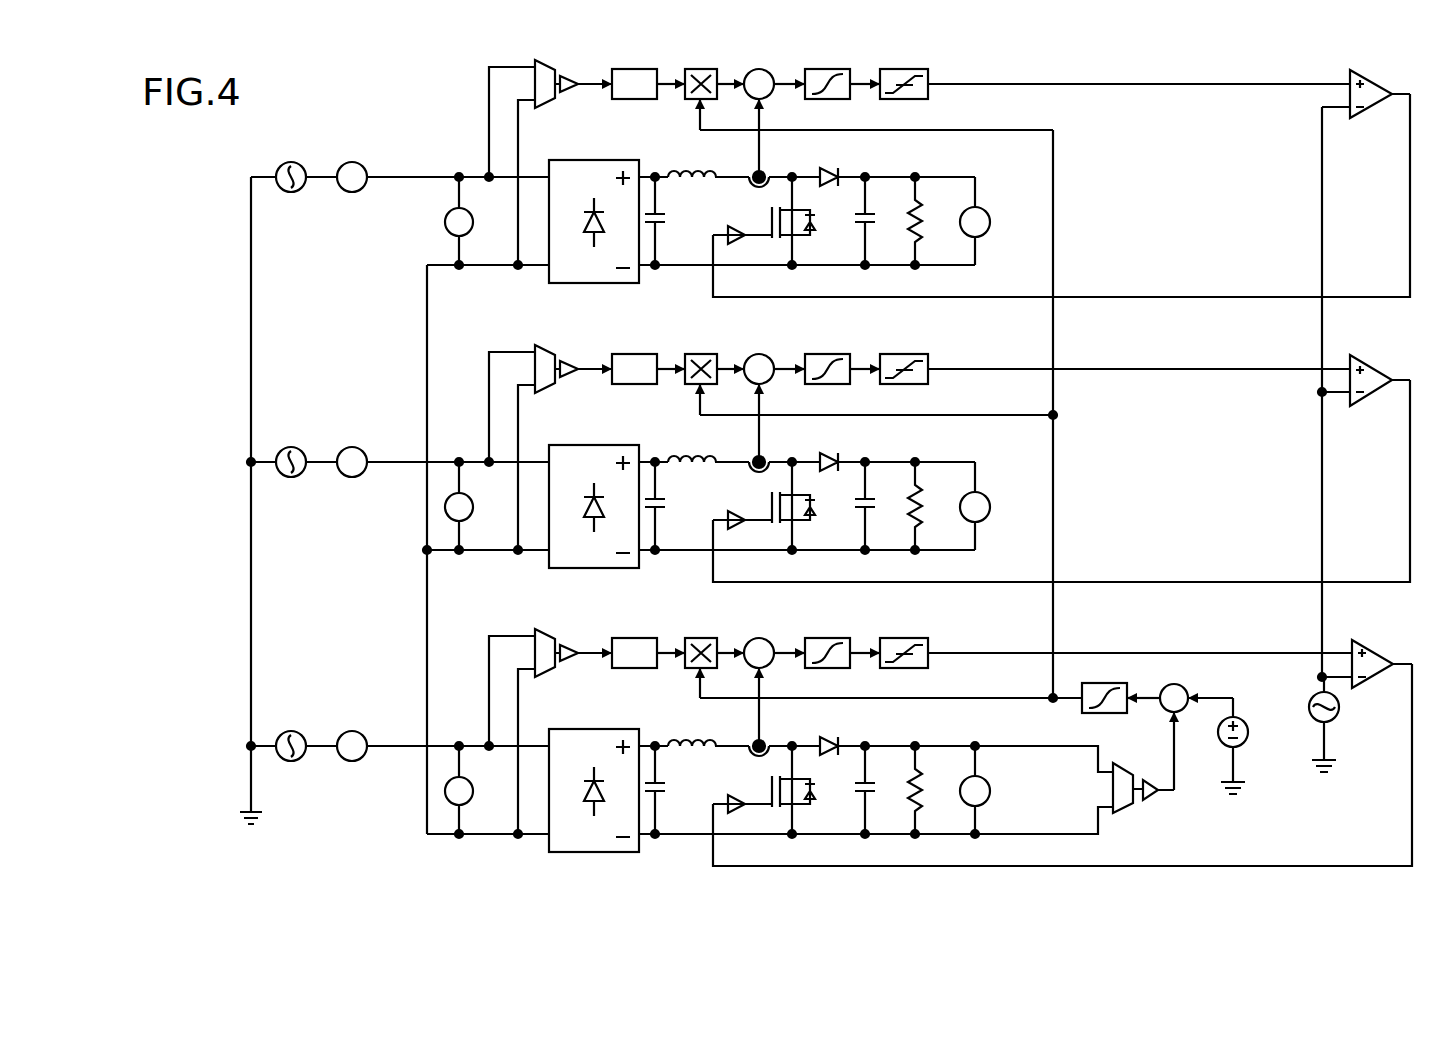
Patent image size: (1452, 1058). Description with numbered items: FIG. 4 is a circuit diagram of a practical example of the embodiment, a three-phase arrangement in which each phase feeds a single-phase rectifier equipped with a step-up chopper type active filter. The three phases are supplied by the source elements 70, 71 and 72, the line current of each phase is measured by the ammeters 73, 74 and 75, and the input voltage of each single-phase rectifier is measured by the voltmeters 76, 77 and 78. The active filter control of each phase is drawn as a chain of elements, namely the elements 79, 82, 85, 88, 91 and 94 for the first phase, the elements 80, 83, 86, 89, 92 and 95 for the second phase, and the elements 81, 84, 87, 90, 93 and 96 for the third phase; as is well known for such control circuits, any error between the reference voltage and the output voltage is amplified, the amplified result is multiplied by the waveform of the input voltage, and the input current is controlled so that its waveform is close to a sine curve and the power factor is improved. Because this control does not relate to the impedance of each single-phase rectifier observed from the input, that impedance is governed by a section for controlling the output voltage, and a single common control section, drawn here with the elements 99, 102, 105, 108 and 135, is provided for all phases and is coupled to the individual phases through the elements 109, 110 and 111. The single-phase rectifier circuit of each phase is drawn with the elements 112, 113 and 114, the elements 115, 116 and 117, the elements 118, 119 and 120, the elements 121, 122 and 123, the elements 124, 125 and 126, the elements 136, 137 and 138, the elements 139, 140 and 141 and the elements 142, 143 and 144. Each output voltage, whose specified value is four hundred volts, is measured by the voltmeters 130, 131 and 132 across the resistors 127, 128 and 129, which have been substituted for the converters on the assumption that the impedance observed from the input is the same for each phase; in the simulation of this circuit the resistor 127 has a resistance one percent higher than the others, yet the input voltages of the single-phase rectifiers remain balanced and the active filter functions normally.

The AC voltage source Vr 70 is at (294, 163).
The AC voltage source Vs 71 is at (294, 448).
The AC voltage source Vt 72 is at (294, 732).
The ammeter 73 is at (356, 163).
The ammeter 74 is at (356, 448).
The ammeter 75 is at (356, 732).
The voltmeter 76 is at (445, 224).
The voltmeter 77 is at (445, 509).
The voltmeter 78 is at (445, 793).
The multiplexer 79 is at (567, 49).
The multiplexer 80 is at (567, 334).
The multiplexer 81 is at (567, 618).
The absolute value circuit 82 is at (632, 69).
The absolute value circuit 83 is at (632, 354).
The absolute value circuit 84 is at (632, 638).
The multiplier 85 is at (700, 69).
The multiplier 86 is at (700, 354).
The multiplier 87 is at (700, 638).
The summing junction 88 is at (766, 70).
The summing junction 89 is at (766, 355).
The summing junction 90 is at (766, 639).
The error amplifier 91 is at (832, 69).
The error amplifier 92 is at (832, 354).
The error amplifier 93 is at (832, 638).
The limiter 94 is at (906, 69).
The limiter 95 is at (906, 354).
The limiter 96 is at (906, 638).
The voltage error amplifier 99 is at (1108, 713).
The summing junction 102 is at (1163, 688).
The reference voltage source 105 is at (1240, 750).
The triangle wave oscillator 108 is at (1311, 698).
The comparator 109 is at (1388, 60).
The comparator 110 is at (1388, 346).
The comparator 111 is at (1388, 630).
The rectifier bridge 112 is at (602, 143).
The rectifier bridge 113 is at (602, 428).
The rectifier bridge 114 is at (602, 712).
The boost inductor 115 is at (684, 170).
The boost inductor 116 is at (684, 455).
The boost inductor 117 is at (684, 739).
The current sensor 118 is at (752, 172).
The current sensor 119 is at (752, 457).
The current sensor 120 is at (752, 741).
The boost diode 121 is at (823, 170).
The boost diode 122 is at (823, 455).
The boost diode 123 is at (823, 739).
The output capacitor 124 is at (870, 208).
The output capacitor 125 is at (870, 493).
The output capacitor 126 is at (870, 777).
The resistor 127 is at (922, 205).
The resistor 128 is at (922, 490).
The resistor 129 is at (922, 774).
The voltmeter 130 is at (987, 211).
The voltmeter 131 is at (987, 496).
The voltmeter 132 is at (987, 790).
The multiplexer 135 is at (1150, 799).
The input capacitor 136 is at (662, 213).
The input capacitor 137 is at (662, 498).
The input capacitor 138 is at (662, 782).
The gate driver 139 is at (740, 248).
The gate driver 140 is at (740, 533).
The gate driver 141 is at (740, 817).
The switching transistor 142 is at (810, 246).
The switching transistor 143 is at (810, 531).
The switching transistor 144 is at (810, 815).